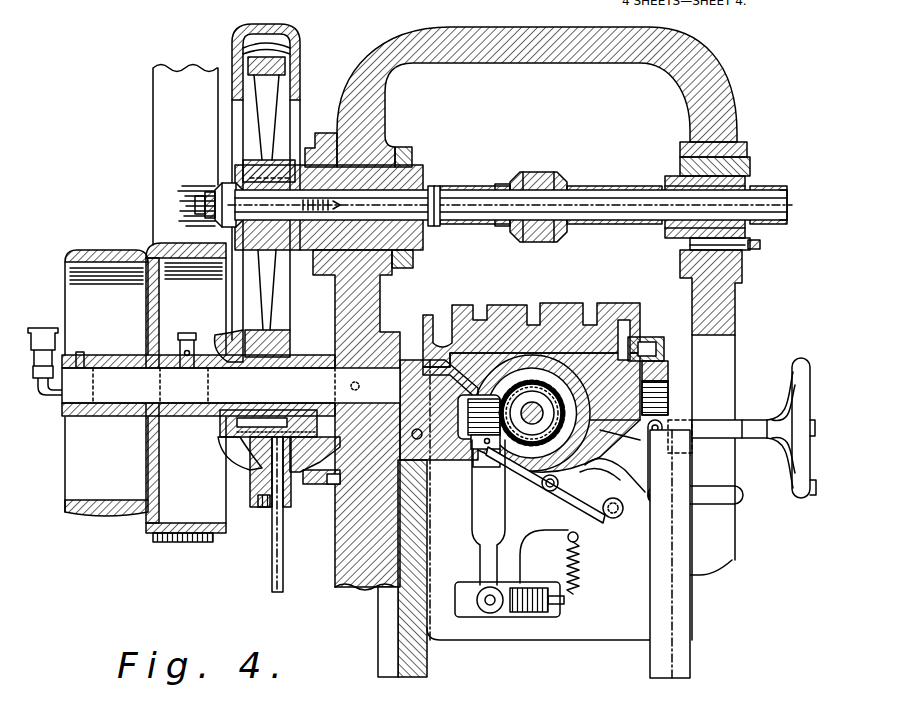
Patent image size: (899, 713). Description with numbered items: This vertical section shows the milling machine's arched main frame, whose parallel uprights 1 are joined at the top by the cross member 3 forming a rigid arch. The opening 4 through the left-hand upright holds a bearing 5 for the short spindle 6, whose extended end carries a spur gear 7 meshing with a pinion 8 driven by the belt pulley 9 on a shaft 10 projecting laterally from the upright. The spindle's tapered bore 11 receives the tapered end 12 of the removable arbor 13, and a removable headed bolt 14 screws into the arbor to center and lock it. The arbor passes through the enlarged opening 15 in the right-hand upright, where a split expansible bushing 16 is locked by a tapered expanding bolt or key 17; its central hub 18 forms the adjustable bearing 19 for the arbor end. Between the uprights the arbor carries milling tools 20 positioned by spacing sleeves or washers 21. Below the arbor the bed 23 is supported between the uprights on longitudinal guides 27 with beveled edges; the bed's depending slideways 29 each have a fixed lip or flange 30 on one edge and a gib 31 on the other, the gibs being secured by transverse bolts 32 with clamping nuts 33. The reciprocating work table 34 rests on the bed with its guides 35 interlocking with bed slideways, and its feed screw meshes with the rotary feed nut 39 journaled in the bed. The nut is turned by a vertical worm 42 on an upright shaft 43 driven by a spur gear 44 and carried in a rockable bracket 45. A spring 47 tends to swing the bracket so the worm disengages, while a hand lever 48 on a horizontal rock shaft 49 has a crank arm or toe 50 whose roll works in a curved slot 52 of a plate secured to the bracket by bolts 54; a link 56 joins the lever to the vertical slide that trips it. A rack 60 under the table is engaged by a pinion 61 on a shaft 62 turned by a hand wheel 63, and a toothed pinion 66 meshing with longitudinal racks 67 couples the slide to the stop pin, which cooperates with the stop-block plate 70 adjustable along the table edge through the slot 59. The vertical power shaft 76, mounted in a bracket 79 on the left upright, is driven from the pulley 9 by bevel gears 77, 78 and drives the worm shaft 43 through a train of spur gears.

The uprights 1 is at (728, 560).
The cross member 3 is at (593, 64).
The opening 4 is at (360, 170).
The bearing 5 is at (392, 146).
The short spindle 6 is at (434, 186).
The spur gear 7 is at (285, 53).
The pinion 8 is at (266, 360).
The belt pulley 9 is at (212, 384).
The shaft 10 is at (136, 396).
The longitudinal bore 11 is at (185, 155).
The tapered end 12 is at (440, 200).
The removable arbor 13 is at (500, 184).
The removable headed bolt 14 is at (247, 186).
The enlarged opening 15 is at (742, 146).
The split expansible bushing 16 is at (290, 560).
The expanding bolt or key 17 is at (695, 249).
The central concentric hub 18 is at (690, 179).
The bearing 19 is at (690, 240).
The rotary cutting saws or milling tools 20 is at (555, 180).
The spacing sleeves or washers 21 is at (610, 226).
The base plate 23 is at (598, 642).
The longitudinal guides 27 is at (385, 589).
The slideways 29 is at (656, 676).
The fixed lip or flange 30 is at (703, 628).
The gib 31 is at (532, 400).
The transverse bolts 32 is at (675, 458).
The clamping nuts 33 is at (515, 378).
The reciprocating work table 34 is at (488, 325).
The longitudinal parallel guides 35 is at (590, 383).
The rotary feed nut 39 is at (546, 393).
The rotary worm 42 is at (439, 410).
The upright shaft 43 is at (473, 456).
The spur gear 44 is at (532, 617).
The upright frame or bracket 45 is at (472, 528).
The spring 47 is at (596, 575).
The hand lever 48 is at (744, 495).
The horizontal rock shaft 49 is at (620, 520).
The crank arm or toe 50 is at (616, 497).
The curved slot 52 is at (566, 536).
The bolts 54 is at (547, 488).
The link 56 is at (660, 504).
The slot 59 is at (632, 322).
The rack 60 is at (616, 419).
The pinion 61 is at (652, 434).
The shaft 62 is at (736, 420).
The hand wheel 63 is at (797, 361).
The toothed pinion 66 is at (670, 400).
The longitudinal racks 67 is at (660, 373).
The plate 70 is at (650, 338).
The power shaft 76 is at (490, 614).
The bevel gear 77 is at (258, 470).
The bevel gear 78 is at (232, 426).
The bracket 79 is at (235, 465).